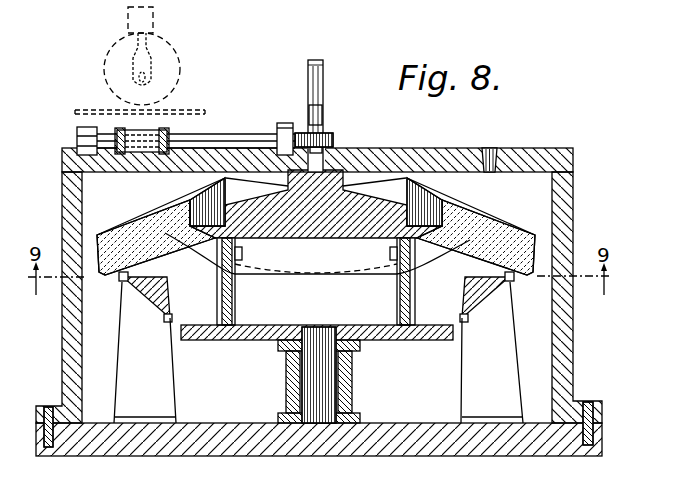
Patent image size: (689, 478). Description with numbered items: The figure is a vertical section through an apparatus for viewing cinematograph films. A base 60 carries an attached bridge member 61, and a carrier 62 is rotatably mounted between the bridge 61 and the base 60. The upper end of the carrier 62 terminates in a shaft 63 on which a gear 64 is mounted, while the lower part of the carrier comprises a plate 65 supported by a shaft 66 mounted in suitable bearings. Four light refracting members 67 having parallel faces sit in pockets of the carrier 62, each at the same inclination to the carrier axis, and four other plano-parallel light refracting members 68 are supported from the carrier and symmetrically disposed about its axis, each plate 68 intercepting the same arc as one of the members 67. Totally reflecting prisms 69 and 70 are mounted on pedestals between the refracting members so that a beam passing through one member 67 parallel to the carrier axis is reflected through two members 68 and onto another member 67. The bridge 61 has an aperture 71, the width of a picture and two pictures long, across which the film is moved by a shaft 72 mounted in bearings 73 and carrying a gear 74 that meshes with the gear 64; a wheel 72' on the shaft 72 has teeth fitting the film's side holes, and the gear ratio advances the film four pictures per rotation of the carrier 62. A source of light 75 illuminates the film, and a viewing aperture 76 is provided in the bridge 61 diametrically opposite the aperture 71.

The base 60 is at (602, 428).
The bridge member 61 is at (567, 369).
The carrier 62 is at (356, 216).
The shaft 63 is at (308, 72).
The gear 64 is at (334, 141).
The plate 65 is at (432, 340).
The shaft 66 is at (318, 400).
The light refracting members 67 is at (140, 216).
The light refracting members 68 is at (235, 313).
The totally reflecting prism 69 is at (150, 300).
The totally reflecting prism 70 is at (500, 290).
The aperture 71 is at (130, 172).
The shaft 72 is at (186, 128).
The wheel 72' is at (95, 142).
The bearings 73 is at (88, 128).
The gear 74 is at (313, 117).
The source of light 75 is at (181, 61).
The viewing aperture 76 is at (490, 150).